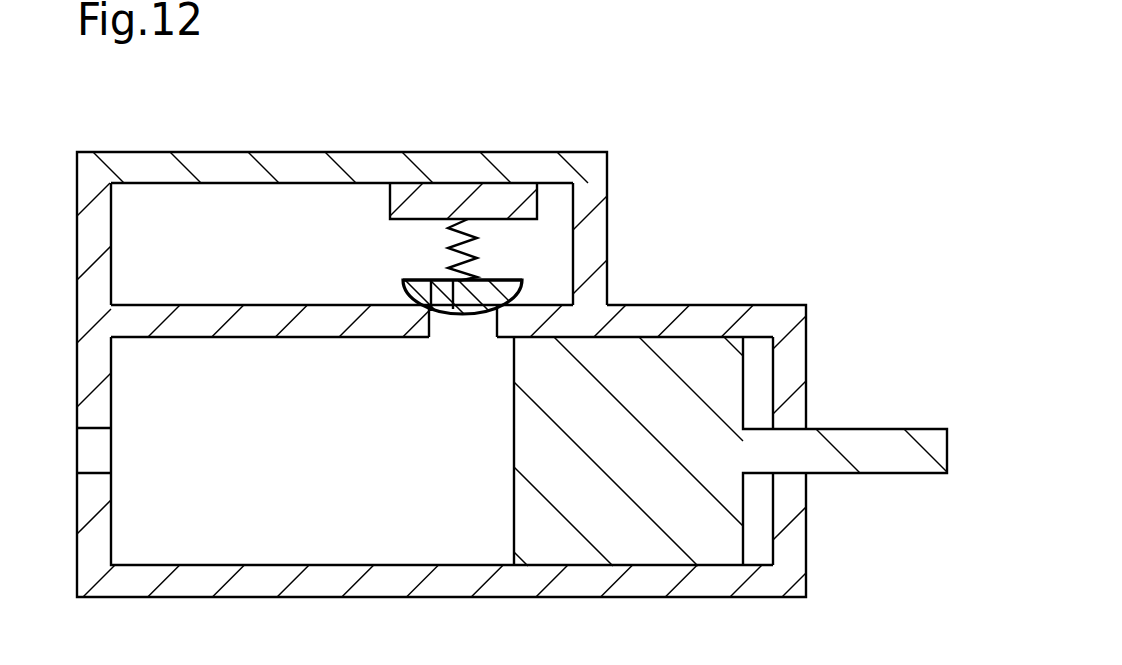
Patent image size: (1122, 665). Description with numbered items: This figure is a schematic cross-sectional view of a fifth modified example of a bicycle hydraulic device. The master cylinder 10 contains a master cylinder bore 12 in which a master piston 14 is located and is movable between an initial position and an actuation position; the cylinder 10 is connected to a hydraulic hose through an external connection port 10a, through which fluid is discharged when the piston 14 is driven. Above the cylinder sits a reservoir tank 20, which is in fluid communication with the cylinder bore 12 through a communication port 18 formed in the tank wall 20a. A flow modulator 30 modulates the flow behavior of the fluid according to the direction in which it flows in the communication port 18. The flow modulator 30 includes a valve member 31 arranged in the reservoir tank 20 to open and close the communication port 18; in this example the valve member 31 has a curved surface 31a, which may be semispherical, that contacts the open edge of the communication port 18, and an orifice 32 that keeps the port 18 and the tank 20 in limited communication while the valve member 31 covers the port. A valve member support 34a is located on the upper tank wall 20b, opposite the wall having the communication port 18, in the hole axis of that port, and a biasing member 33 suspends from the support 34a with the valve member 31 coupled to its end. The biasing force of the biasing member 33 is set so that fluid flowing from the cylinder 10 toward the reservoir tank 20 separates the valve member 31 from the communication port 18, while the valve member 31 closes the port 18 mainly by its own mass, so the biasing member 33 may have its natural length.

The master cylinder 10 is at (710, 315).
The external connection port 10a is at (77, 463).
The master cylinder bore 12 is at (300, 337).
The master piston 14 is at (660, 555).
The communication port 18 is at (437, 317).
The reservoir tank 20 is at (593, 238).
The tank wall 20a is at (147, 305).
The tank wall (upper wall) 20b is at (228, 185).
The flow modulator 30 is at (305, 188).
The valve member 31 is at (405, 294).
The curved surface 31a is at (478, 315).
The orifice 32 is at (443, 277).
The biasing member 33 is at (447, 243).
The valve member support 34a is at (388, 190).